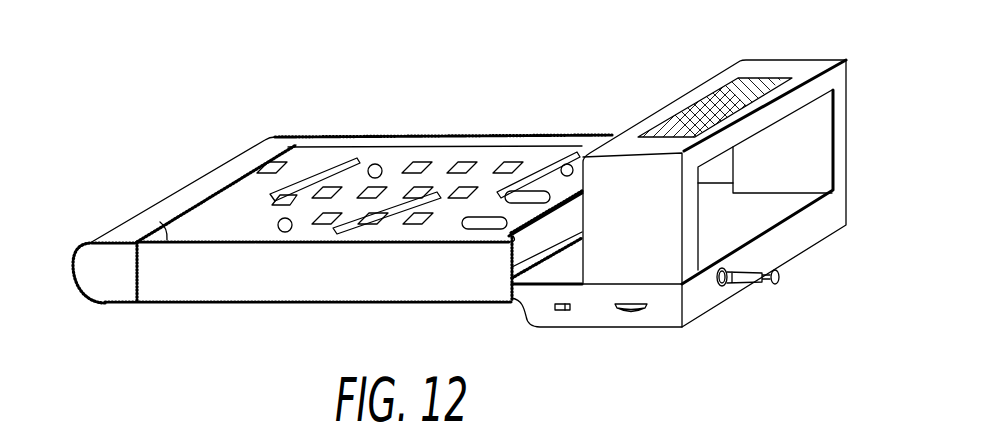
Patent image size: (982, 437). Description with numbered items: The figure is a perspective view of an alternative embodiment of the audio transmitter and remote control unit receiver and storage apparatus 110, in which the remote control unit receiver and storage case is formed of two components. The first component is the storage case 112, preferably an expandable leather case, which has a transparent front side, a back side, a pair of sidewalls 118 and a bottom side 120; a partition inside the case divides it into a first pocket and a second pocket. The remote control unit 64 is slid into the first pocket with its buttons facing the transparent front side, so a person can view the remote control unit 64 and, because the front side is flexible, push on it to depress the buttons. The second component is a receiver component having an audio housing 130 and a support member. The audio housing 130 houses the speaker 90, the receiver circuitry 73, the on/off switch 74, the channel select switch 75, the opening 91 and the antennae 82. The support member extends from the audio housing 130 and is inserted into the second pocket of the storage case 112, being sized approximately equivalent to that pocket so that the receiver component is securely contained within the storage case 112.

The audio transmitter and remote control unit receiver and storage apparatus 110 is at (139, 110).
The storage case 112 is at (308, 152).
The sidewalls 118 is at (210, 282).
The bottom side 120 is at (75, 262).
The audio housing 130 is at (790, 66).
The speaker 90 is at (715, 96).
The opening 91 is at (821, 172).
The remote control unit 64 is at (557, 228).
The antennae 82 is at (745, 279).
The receiver circuitry 73 is at (565, 313).
The on/off switch 74 is at (627, 313).
The channel select switch 75 is at (557, 313).